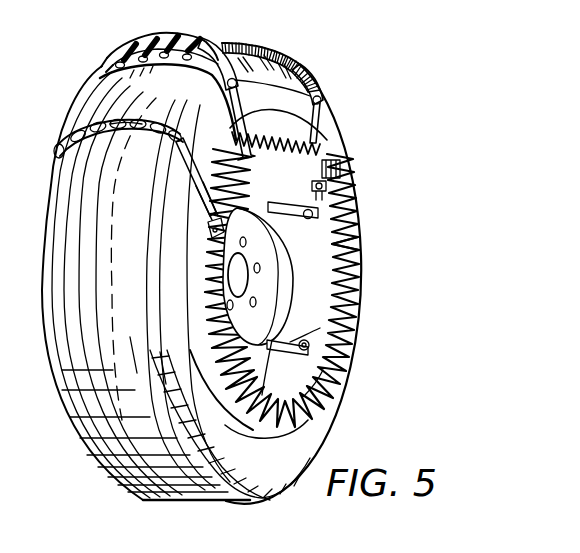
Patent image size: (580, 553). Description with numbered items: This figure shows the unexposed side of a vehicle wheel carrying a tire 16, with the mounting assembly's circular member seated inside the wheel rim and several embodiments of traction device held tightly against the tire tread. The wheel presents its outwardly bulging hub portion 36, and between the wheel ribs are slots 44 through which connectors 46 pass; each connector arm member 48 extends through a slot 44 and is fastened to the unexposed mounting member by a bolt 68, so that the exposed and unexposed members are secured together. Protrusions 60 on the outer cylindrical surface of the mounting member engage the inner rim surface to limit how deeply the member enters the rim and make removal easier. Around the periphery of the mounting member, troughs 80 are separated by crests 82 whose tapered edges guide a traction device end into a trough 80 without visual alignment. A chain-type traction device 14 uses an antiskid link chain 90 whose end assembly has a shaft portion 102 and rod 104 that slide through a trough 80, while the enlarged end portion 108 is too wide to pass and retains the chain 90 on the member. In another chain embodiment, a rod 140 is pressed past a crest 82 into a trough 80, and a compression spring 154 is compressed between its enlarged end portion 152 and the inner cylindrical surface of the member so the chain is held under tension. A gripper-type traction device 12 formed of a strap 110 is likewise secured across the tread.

The gripper-type traction device 12 is at (114, 44).
The chain-type traction device 14 is at (124, 138).
The vehicle tire 16 is at (55, 170).
The hub portion 36 is at (228, 238).
The wheel slot 44 is at (327, 355).
The connector 46 is at (323, 370).
The connector arm member 48 is at (320, 328).
The protrusion 60 is at (228, 126).
The bolt 68 is at (320, 332).
The trough 80 is at (357, 277).
The crest 82 is at (358, 268).
The antiskid link chain 90 is at (68, 130).
The shaft portion 102 is at (190, 172).
The rod 104 is at (195, 208).
The enlarged end portion 108 is at (212, 236).
The strap 110 is at (163, 32).
The rod 140 is at (323, 114).
The enlarged end portion 152 is at (326, 187).
The compression spring 154 is at (330, 172).